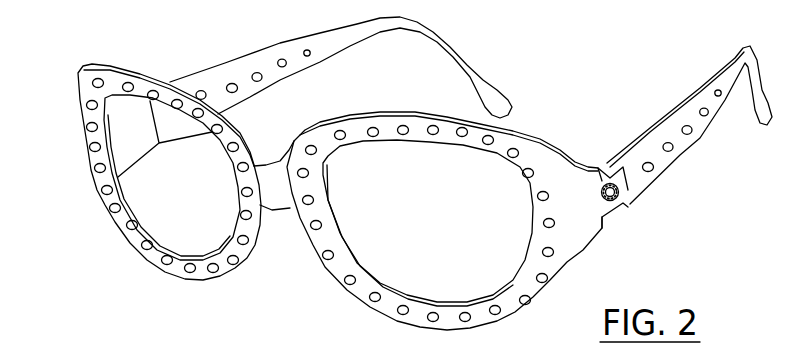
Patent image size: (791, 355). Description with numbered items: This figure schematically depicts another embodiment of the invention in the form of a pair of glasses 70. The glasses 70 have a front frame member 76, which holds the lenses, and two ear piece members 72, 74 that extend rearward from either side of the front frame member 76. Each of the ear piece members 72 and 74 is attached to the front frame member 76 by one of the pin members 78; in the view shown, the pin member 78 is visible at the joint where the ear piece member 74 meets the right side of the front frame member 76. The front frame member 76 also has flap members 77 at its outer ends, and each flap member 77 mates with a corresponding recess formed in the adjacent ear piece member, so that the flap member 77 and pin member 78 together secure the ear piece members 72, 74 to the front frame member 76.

The pair of glasses 70 is at (228, 314).
The ear piece member 72 is at (263, 62).
The ear piece member 74 is at (663, 117).
The front frame member 76 is at (335, 274).
The flap member 77 is at (612, 165).
The pin member 78 is at (627, 203).